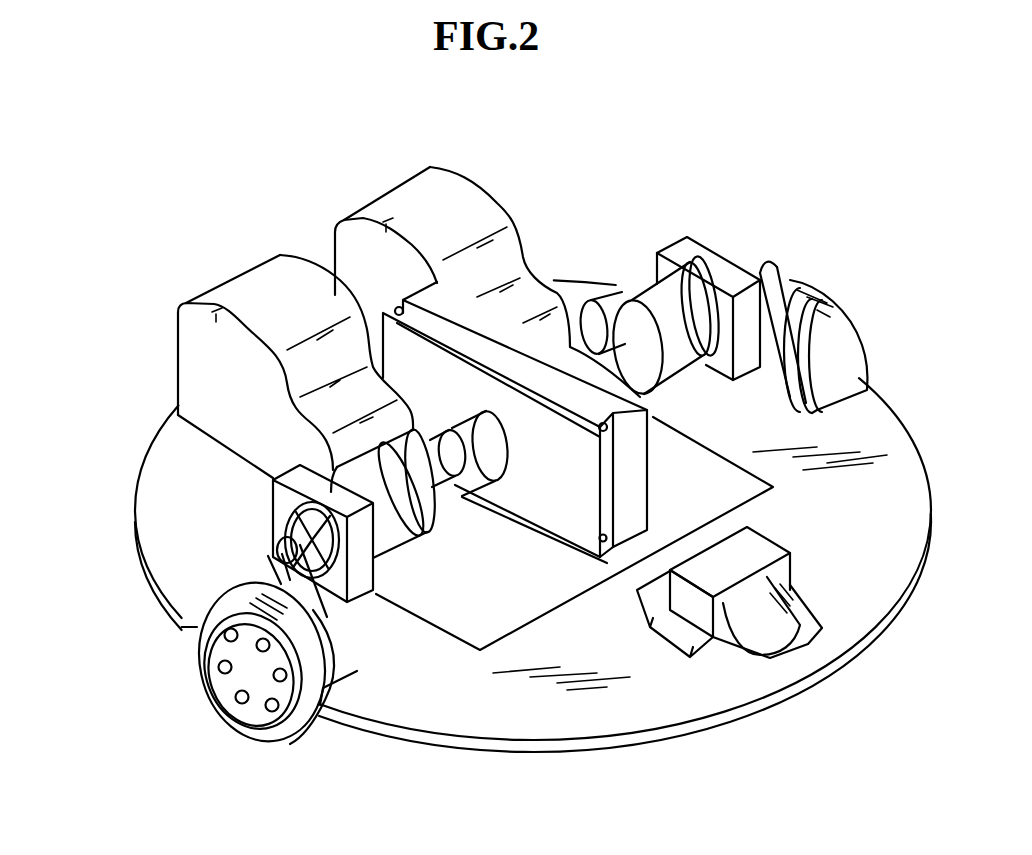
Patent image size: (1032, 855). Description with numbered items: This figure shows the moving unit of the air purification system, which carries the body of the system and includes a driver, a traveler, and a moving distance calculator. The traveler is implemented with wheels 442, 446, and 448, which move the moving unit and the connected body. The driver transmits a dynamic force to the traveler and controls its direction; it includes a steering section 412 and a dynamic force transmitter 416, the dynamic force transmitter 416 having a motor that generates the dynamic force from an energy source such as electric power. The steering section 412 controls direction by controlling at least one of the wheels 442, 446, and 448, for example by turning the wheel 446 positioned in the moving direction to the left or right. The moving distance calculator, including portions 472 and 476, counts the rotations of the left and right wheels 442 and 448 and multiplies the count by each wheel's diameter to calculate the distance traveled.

The steering section 412 is at (604, 288).
The dynamic force transmitter 416 is at (550, 493).
The wheel 442 is at (221, 690).
The wheel 446 is at (773, 636).
The wheel 448 is at (838, 300).
The moving distance calculator portion 472 is at (181, 328).
The moving distance calculator portion 476 is at (343, 206).